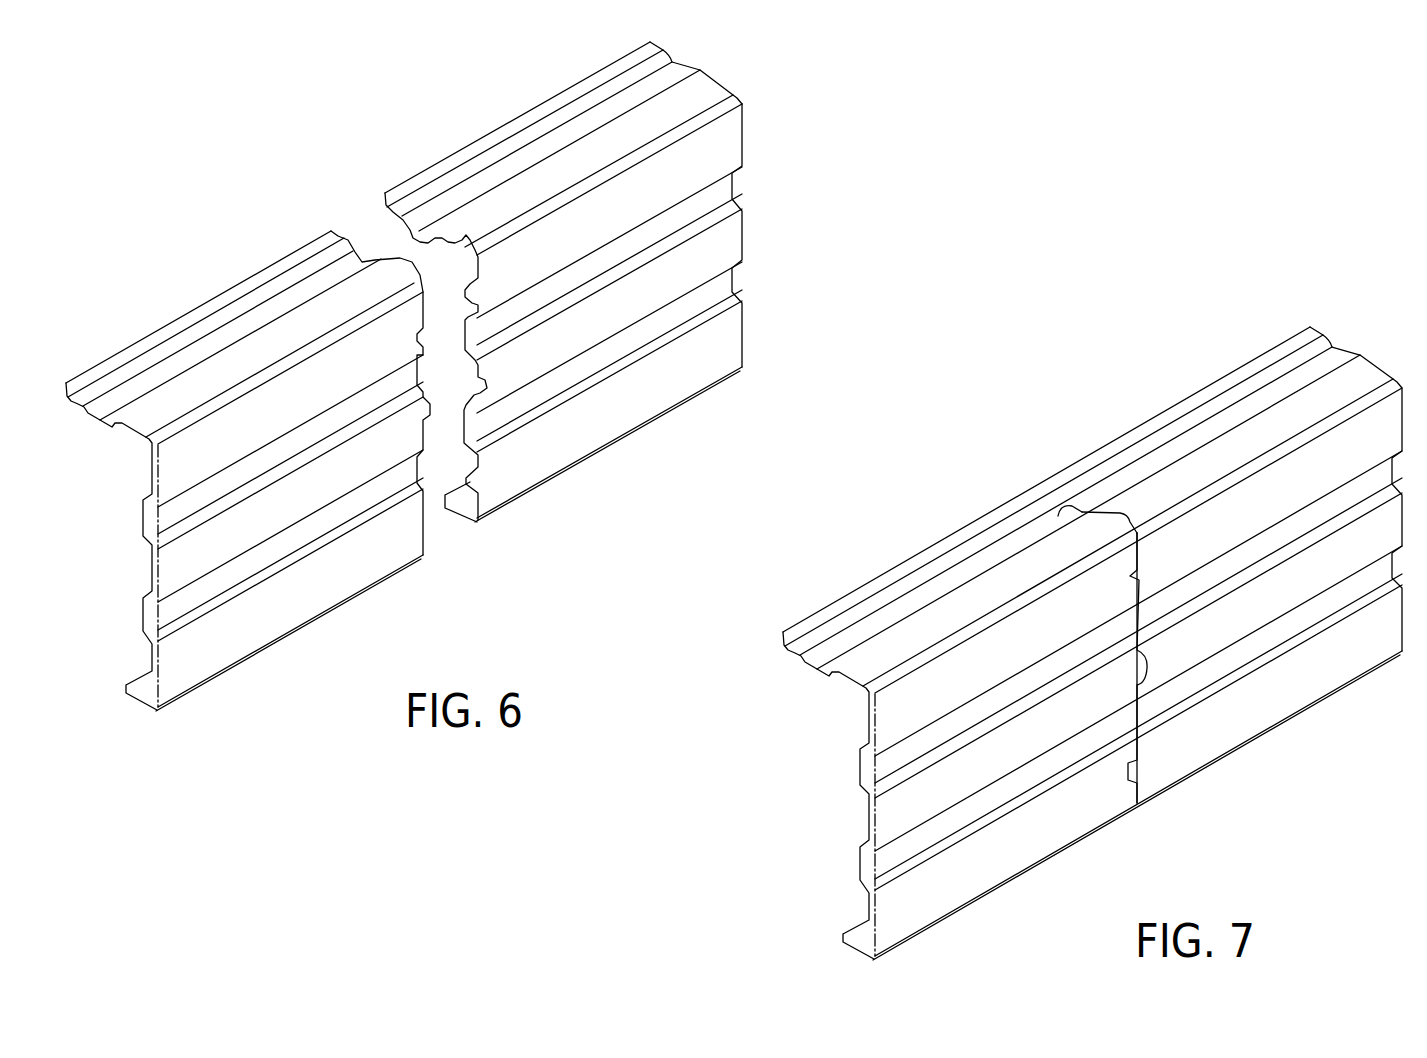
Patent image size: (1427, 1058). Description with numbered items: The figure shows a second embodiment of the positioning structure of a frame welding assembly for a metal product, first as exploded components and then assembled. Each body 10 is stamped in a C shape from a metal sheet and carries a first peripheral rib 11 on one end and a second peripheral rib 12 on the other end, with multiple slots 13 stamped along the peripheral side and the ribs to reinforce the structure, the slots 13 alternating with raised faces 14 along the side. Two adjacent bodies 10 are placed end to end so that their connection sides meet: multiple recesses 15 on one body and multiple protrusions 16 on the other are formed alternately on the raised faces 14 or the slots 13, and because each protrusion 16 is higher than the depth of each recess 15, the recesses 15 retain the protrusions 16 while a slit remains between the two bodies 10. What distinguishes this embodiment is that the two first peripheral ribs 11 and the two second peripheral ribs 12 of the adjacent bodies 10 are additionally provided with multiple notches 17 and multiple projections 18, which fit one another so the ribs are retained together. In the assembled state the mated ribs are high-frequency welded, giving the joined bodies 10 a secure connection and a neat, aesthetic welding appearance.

In FIG. 6, the body 10 is at (414, 385).
In FIG. 7, the body 10 is at (1065, 609).
In FIG. 6, the first peripheral rib 11 is at (492, 150).
In FIG. 6, the second peripheral rib 12 is at (457, 517).
In FIG. 6, the slots 13 is at (585, 370).
In FIG. 6, the raised faces 14 is at (645, 297).
In FIG. 7, the recesses 15 is at (1126, 572).
In FIG. 7, the protrusions 16 is at (1140, 578).
In FIG. 6, the notches 17 is at (360, 260).
In FIG. 7, the notches 17 is at (1065, 503).
In FIG. 6, the projections 18 is at (420, 228).
In FIG. 7, the projections 18 is at (1073, 508).